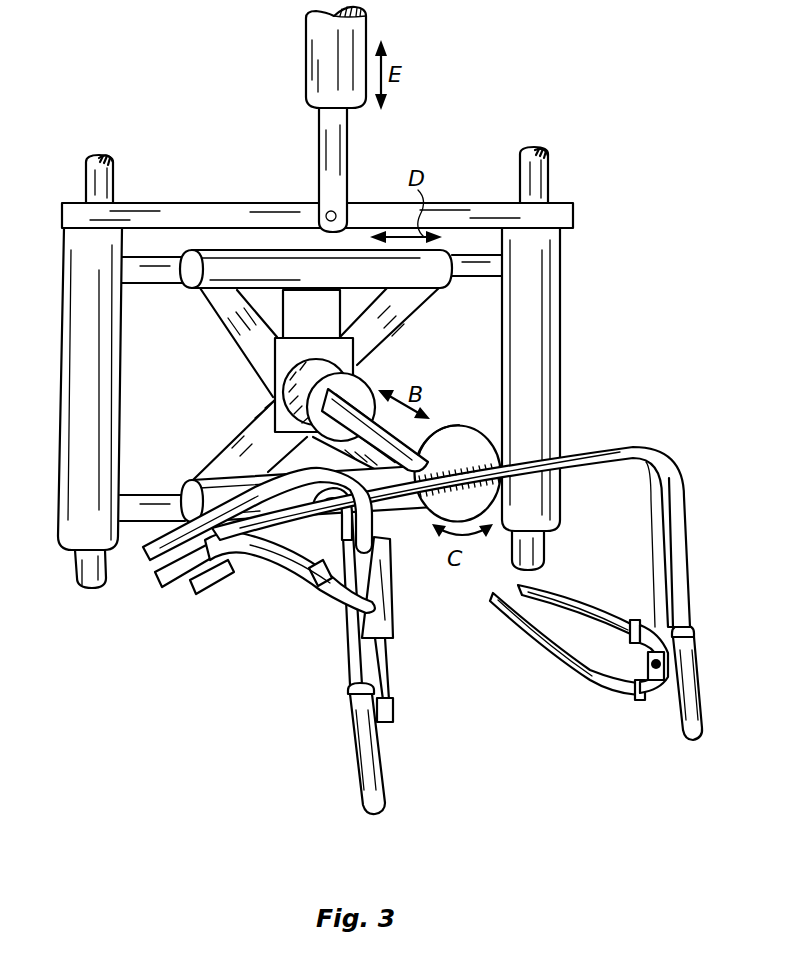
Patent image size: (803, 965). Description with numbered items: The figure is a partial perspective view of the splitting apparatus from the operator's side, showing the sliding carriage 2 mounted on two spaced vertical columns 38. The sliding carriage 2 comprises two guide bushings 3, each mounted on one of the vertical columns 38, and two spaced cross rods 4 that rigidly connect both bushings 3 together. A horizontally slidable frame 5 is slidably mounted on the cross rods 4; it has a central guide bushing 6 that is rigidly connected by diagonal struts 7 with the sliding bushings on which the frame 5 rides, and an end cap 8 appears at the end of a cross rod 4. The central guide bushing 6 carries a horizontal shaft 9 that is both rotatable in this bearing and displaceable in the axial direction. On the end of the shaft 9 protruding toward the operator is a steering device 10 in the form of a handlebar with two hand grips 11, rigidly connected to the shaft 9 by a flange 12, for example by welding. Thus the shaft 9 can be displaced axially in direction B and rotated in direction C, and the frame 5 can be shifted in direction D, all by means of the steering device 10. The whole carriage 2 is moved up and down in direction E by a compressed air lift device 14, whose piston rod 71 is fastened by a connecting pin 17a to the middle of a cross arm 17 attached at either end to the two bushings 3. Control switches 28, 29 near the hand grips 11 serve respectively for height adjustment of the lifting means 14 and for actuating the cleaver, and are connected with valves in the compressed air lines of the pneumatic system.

The sliding carriage 2 is at (577, 283).
The guide bushings 3 is at (122, 402).
The cross rods 4 is at (474, 268).
The horizontally slidable frame 5 is at (390, 352).
The central guide bushing 6 is at (314, 372).
The diagonal struts 7 is at (258, 360).
The bar end cap 8 is at (198, 285).
The horizontal shaft 9 is at (412, 496).
The steering device 10 is at (604, 454).
The hand grips 11 is at (378, 775).
The flange 12 is at (462, 444).
The compressed air lift device 14 is at (312, 44).
The cross arm 17 is at (196, 213).
The connecting pin 17a is at (340, 222).
The control switch 28 is at (393, 712).
The control switch 29 is at (662, 664).
The vertical columns 38 is at (113, 178).
The piston rod 71 is at (326, 146).